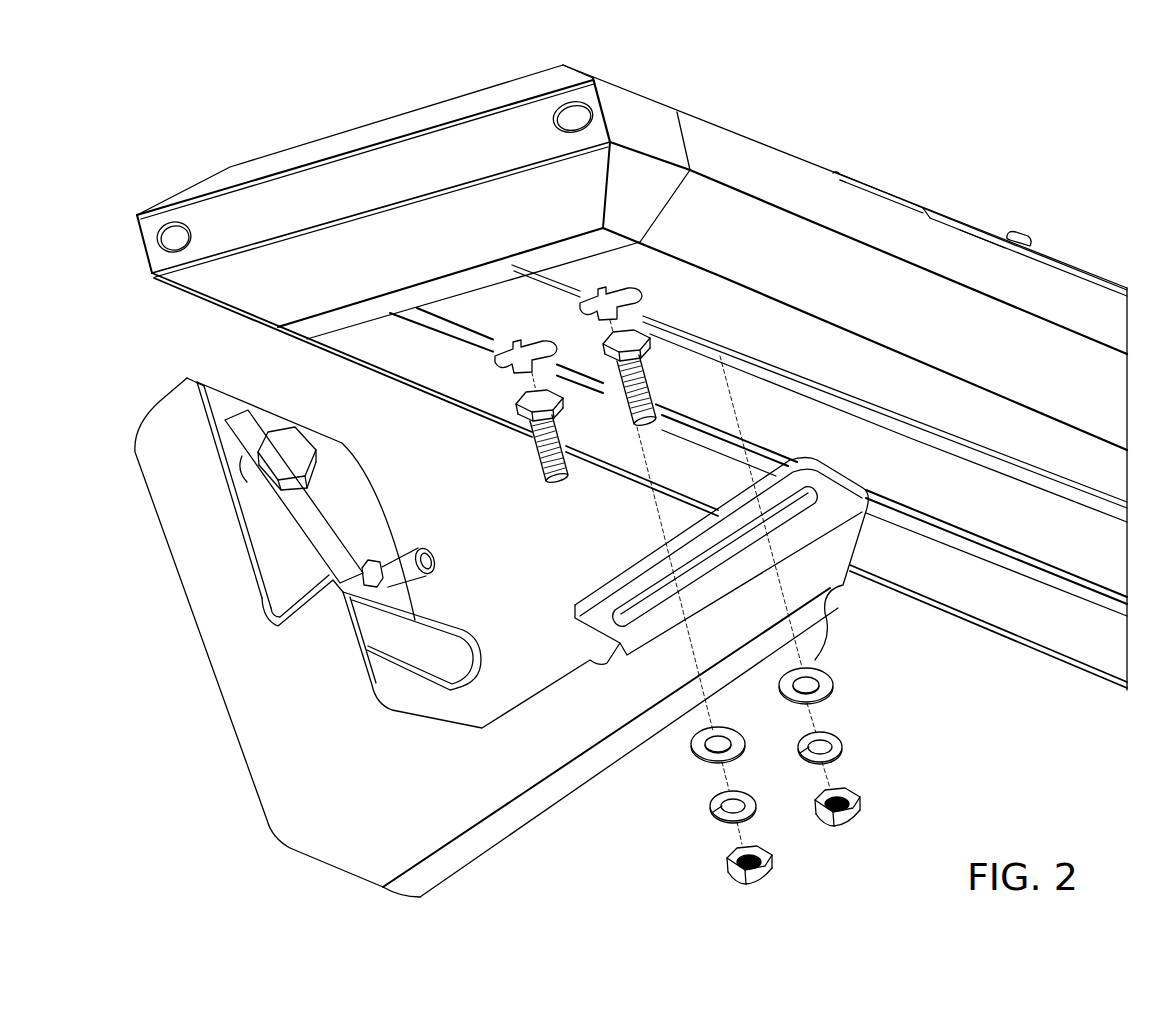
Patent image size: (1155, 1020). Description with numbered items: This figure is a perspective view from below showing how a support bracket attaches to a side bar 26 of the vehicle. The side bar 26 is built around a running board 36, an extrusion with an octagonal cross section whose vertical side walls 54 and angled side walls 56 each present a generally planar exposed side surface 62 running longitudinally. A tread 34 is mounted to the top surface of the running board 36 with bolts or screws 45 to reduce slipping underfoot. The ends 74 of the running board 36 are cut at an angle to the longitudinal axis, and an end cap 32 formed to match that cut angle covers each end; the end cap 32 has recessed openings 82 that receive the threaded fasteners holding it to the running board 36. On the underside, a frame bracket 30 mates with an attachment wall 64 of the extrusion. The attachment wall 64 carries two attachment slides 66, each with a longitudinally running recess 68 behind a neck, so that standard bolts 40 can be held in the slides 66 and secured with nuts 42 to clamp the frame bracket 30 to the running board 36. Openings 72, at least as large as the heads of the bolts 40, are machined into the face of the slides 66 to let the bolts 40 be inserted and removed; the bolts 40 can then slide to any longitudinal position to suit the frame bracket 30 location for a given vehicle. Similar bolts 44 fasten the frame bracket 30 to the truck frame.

The side bar 26 is at (780, 170).
The frame bracket 30 is at (303, 800).
The end cap 32 is at (307, 190).
The tread 34 is at (990, 236).
The running board 36 is at (733, 157).
The bolts 40 is at (620, 412).
The nuts 42 is at (767, 846).
The bolts 44 is at (292, 455).
The bolts or screws 45 is at (1022, 234).
The vertical side wall 54 is at (872, 220).
The angled side wall 56 is at (797, 253).
The side surface 62 is at (925, 310).
The attachment wall 64 is at (967, 517).
The attachment slide 66 is at (1078, 493).
The recess 68 is at (903, 517).
The openings 72 is at (577, 312).
The ends 74 is at (690, 141).
The recessed openings 82 is at (174, 232).